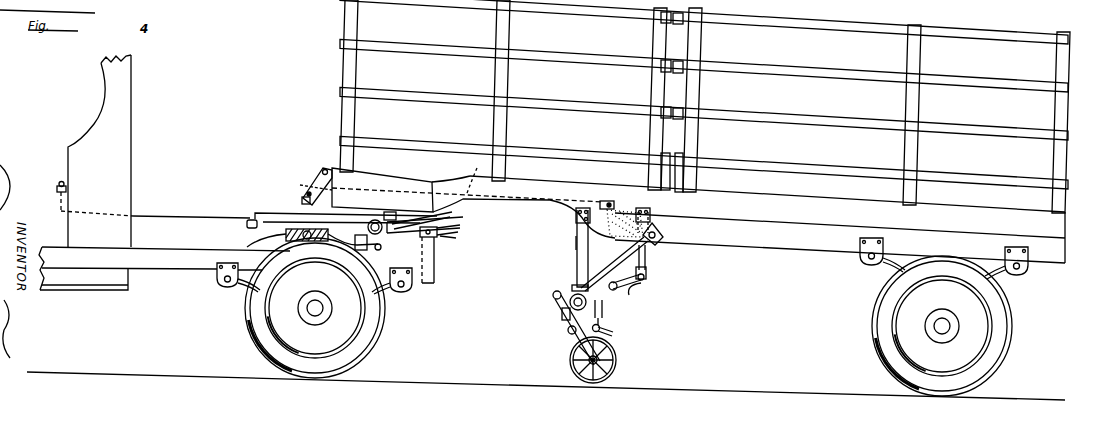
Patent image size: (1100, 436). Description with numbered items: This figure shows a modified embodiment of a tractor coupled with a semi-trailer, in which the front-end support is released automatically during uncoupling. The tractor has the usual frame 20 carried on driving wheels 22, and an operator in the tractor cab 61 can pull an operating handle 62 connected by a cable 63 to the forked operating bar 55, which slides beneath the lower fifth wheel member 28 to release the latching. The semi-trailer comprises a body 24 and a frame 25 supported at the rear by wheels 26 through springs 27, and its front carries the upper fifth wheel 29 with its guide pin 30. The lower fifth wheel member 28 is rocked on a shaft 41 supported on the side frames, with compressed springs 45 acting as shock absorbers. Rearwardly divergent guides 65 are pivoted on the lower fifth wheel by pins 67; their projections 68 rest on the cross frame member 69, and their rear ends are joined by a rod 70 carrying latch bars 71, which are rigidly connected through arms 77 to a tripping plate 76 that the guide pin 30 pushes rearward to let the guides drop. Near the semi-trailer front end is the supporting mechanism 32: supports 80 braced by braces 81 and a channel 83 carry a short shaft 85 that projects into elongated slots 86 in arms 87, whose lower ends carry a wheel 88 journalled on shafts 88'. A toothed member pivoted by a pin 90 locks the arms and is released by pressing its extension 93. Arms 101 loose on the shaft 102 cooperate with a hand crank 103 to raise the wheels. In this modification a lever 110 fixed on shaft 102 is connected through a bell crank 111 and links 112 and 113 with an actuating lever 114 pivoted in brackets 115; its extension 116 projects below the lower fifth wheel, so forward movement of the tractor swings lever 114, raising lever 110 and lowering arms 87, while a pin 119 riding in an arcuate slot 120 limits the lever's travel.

The frame 20 is at (187, 263).
The driving wheels 22 is at (253, 310).
The body 24 is at (748, 170).
The frame 25 is at (775, 232).
The wheels 26 is at (883, 322).
The springs 27 is at (882, 272).
The lower fifth wheel member 28 is at (272, 207).
The upper fifth wheel 29 is at (452, 214).
The guide pin 30 is at (473, 207).
The supporting mechanism 32 is at (576, 243).
The shaft 41 is at (305, 239).
The springs 45 is at (287, 235).
The operating bar 55 is at (248, 226).
The tractor cab 61 is at (117, 143).
The operating handle 62 is at (59, 183).
The cable 63 is at (153, 217).
The guides 65 is at (408, 224).
The pins 67 is at (374, 221).
The projections 68 is at (355, 242).
The cross frame member 69 is at (372, 248).
The rod 70 is at (433, 237).
The latch bars 71 is at (436, 250).
The tripping plate 76 is at (459, 229).
The arms 77 is at (457, 236).
The supports 80 is at (577, 231).
The braces 81 is at (650, 254).
The channel 83 is at (562, 314).
The short shaft 85 is at (576, 272).
The elongated slots 86 is at (603, 322).
The arms 87 is at (577, 340).
The wheel 88 is at (609, 360).
The shafts 88' is at (578, 360).
The pin 90 is at (568, 332).
The extension 93 is at (613, 335).
The arms 101 is at (590, 280).
The shaft 102 is at (603, 316).
The hand crank 103 is at (553, 295).
The lever 110 is at (629, 290).
The bell crank 111 is at (616, 206).
The link 112 is at (650, 267).
The link 113 is at (457, 178).
The actuating lever 114 is at (324, 169).
The brackets 115 is at (322, 171).
The extension 116 is at (303, 203).
The pin 119 is at (307, 194).
The arcuate slot 120 is at (382, 190).